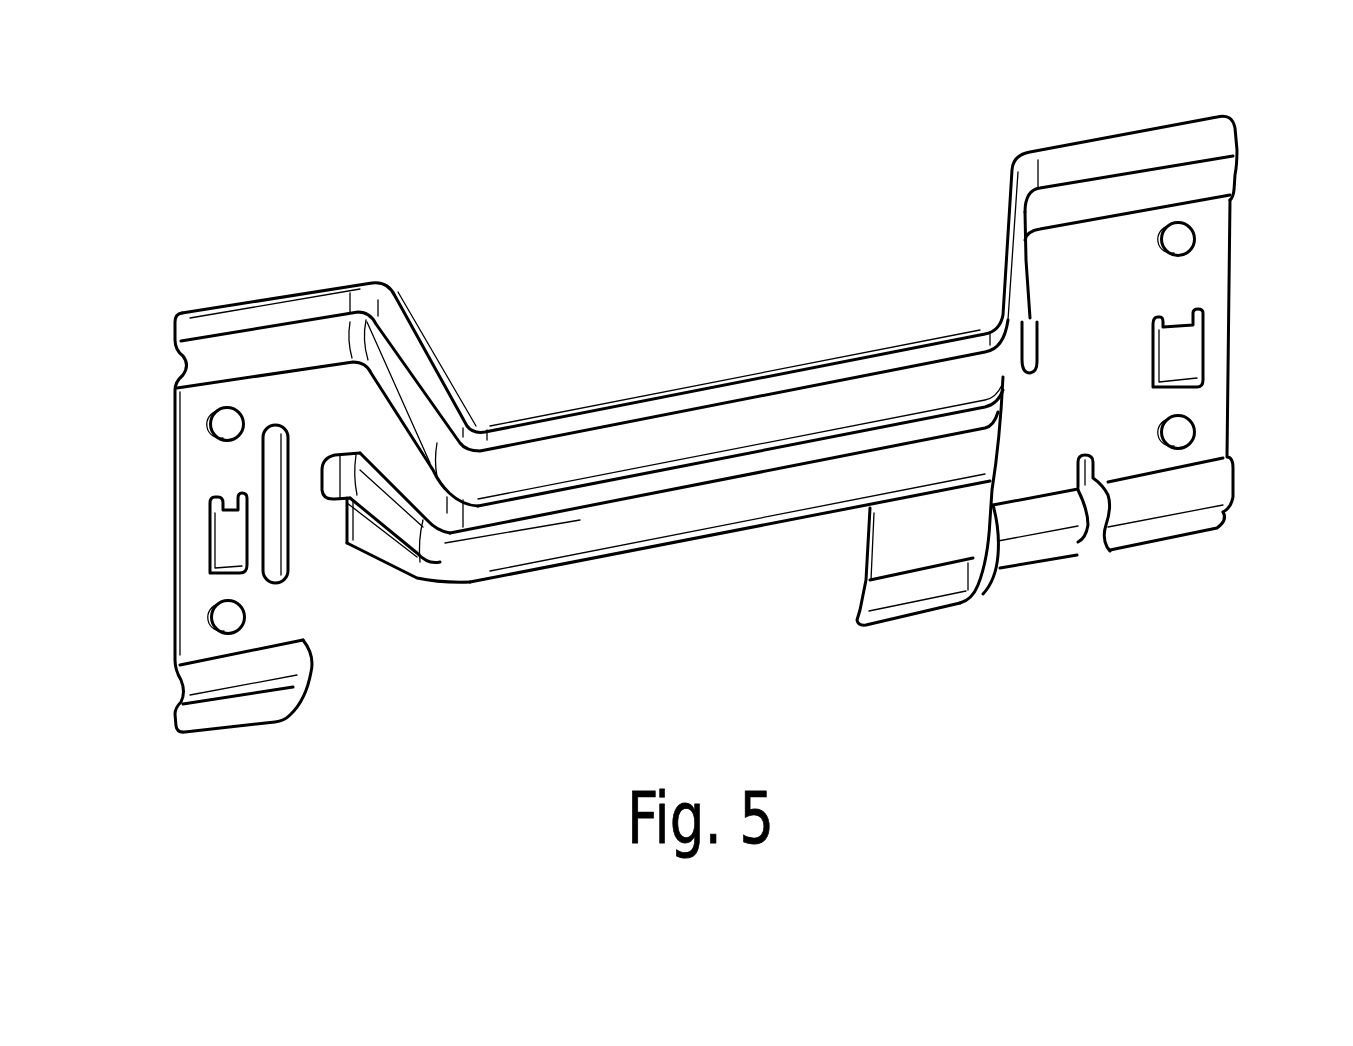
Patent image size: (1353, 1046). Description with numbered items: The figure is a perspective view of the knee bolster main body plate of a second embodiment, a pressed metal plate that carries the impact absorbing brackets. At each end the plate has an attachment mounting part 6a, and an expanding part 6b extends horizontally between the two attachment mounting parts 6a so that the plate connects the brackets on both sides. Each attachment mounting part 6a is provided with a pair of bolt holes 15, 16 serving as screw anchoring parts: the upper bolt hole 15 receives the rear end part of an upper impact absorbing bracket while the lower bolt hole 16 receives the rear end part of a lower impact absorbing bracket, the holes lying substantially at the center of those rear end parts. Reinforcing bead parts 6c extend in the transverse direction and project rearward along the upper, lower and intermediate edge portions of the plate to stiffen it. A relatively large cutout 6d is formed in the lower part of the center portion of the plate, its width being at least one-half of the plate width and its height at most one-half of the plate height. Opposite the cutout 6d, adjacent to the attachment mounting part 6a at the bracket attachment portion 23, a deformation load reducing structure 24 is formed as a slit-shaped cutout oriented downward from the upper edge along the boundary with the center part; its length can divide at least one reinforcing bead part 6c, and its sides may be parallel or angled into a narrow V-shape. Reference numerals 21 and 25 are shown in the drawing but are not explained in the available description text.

The attachment mounting part 6a is at (195, 513).
The expanding part 6b is at (777, 367).
The reinforcing bead part 6c is at (228, 678).
The cutout 6d is at (453, 585).
The upper bolt hole 15 is at (212, 416).
The lower bolt hole 16 is at (213, 613).
The top flange 21 is at (173, 408).
The lower bracket attachment portion 23 is at (1213, 440).
The deformation load reducing structure 24 is at (195, 582).
The notch 25 is at (1094, 503).